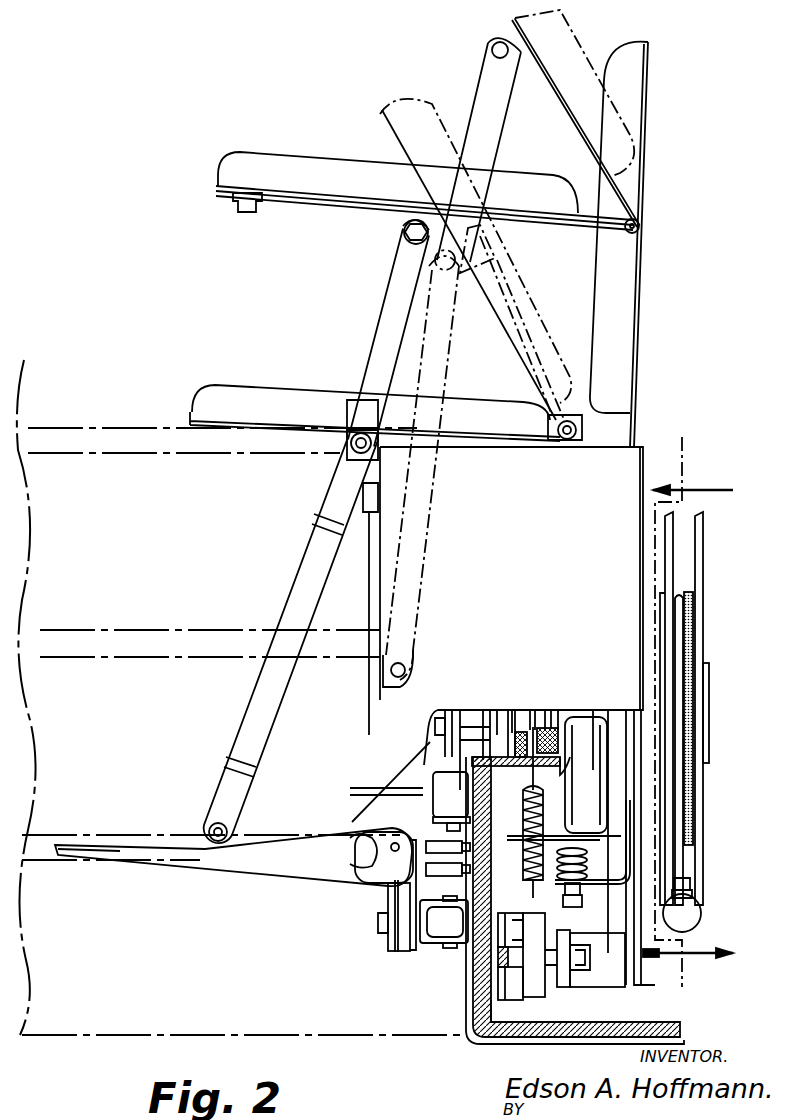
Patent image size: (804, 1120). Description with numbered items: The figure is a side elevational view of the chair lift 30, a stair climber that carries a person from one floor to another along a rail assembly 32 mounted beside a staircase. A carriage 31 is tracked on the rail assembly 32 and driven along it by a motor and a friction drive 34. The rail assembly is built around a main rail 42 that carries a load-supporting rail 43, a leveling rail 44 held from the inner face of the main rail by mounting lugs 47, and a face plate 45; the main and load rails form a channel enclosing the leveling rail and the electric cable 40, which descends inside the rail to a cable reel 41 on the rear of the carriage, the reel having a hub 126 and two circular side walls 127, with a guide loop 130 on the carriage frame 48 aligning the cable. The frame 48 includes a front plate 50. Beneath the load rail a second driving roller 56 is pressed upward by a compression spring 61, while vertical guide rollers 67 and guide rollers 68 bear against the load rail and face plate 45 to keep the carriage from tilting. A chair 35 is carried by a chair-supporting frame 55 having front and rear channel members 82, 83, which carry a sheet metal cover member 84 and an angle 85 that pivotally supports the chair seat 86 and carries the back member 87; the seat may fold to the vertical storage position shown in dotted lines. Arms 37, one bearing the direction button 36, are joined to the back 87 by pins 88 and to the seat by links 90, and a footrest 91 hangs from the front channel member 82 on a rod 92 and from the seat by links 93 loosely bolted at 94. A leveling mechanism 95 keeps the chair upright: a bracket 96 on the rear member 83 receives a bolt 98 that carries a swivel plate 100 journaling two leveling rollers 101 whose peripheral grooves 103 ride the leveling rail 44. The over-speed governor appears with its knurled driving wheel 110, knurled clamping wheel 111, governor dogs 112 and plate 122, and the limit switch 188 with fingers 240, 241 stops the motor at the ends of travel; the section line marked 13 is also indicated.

The chair lift 30 is at (668, 239).
The carriage 31 is at (497, 693).
The rail assembly 32 is at (468, 988).
The friction drive 34 is at (566, 746).
The chair 35 is at (240, 388).
The direction button 36 is at (590, 46).
The arm 37 is at (283, 158).
The cable 40 is at (688, 630).
The cable reel 41 is at (709, 724).
The main rail 42 is at (478, 1010).
The load-supporting rail 43 is at (548, 767).
The leveling rail 44 is at (500, 966).
The face plate 45 is at (462, 900).
The mounting lugs 47 is at (497, 958).
The frame 48 is at (404, 793).
The front plate 50 is at (440, 778).
The chair-supporting frame 55 is at (396, 895).
The second driving roller 56 is at (545, 822).
The compression spring 61 is at (582, 882).
The vertical guide rollers 67 is at (586, 717).
The guide rollers 68 is at (447, 782).
The front channel member 82 is at (395, 906).
The rear channel member 83 is at (640, 975).
The sheet metal cover member 84 is at (395, 700).
The angle 85 is at (628, 426).
The chair seat 86 is at (528, 288).
The back member 87 is at (622, 277).
The pins 88 is at (638, 223).
The links 90 is at (388, 300).
The footrest 91 is at (145, 850).
The rod 92 is at (392, 848).
The links 93 is at (262, 680).
The bolted connection 94 is at (216, 843).
The leveling mechanism 95 is at (533, 994).
The bracket 96 is at (603, 985).
The bolt 98 is at (590, 962).
The swivel plate 100 is at (542, 1000).
The leveling rollers 101 is at (500, 1008).
The peripheral groove 103 is at (508, 915).
The knurled driving wheel 110 is at (520, 716).
The knurled clamping wheel 111 is at (552, 714).
The governor dogs 112 is at (446, 712).
The plate 122 is at (450, 706).
The hub 126 is at (709, 680).
The side walls 127 is at (700, 540).
The guide loop 130 is at (700, 925).
The limit switch 188 is at (402, 825).
The finger 240 is at (470, 853).
The finger 241 is at (470, 875).
The section line 13 is at (688, 712).